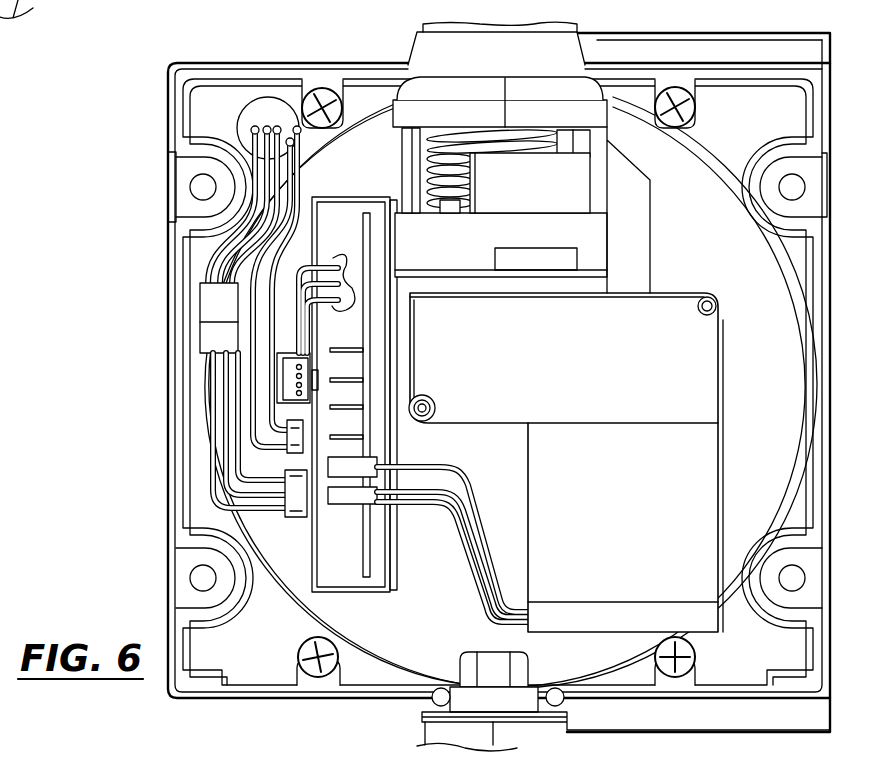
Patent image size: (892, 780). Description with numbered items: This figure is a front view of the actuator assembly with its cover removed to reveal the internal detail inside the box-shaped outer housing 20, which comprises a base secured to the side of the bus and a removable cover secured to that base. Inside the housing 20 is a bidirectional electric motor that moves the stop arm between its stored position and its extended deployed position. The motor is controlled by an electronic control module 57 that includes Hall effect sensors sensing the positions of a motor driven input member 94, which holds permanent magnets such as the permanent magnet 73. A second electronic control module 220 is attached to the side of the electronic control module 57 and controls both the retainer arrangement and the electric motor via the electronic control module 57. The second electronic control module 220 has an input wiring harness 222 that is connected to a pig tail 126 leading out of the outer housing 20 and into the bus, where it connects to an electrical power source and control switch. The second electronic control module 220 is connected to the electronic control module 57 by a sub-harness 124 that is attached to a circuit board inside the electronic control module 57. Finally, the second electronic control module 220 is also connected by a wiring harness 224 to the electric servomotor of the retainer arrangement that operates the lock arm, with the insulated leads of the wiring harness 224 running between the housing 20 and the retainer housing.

The outer housing 20 is at (321, 52).
The wiring harness 224 is at (290, 180).
The pig tail 126 is at (218, 272).
The input wiring harness 222 is at (220, 466).
The sub-harness 124 is at (340, 262).
The electronic control module 57 is at (373, 568).
The second electronic control module 220 is at (297, 462).
The permanent magnet 73 is at (517, 258).
The motor driven input member 94 is at (588, 240).